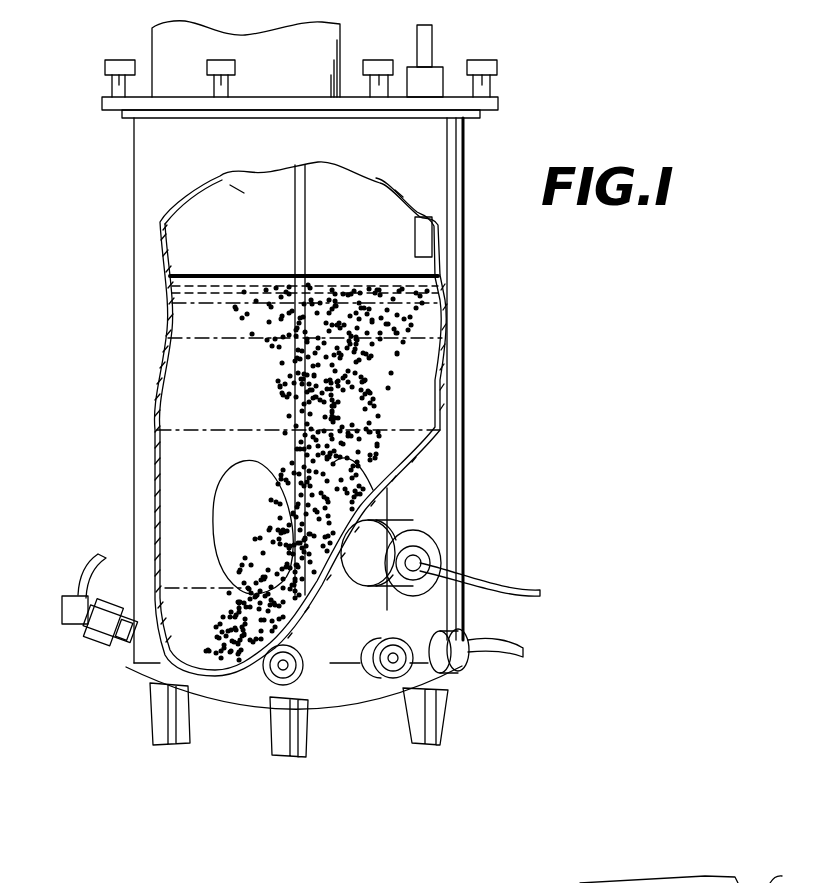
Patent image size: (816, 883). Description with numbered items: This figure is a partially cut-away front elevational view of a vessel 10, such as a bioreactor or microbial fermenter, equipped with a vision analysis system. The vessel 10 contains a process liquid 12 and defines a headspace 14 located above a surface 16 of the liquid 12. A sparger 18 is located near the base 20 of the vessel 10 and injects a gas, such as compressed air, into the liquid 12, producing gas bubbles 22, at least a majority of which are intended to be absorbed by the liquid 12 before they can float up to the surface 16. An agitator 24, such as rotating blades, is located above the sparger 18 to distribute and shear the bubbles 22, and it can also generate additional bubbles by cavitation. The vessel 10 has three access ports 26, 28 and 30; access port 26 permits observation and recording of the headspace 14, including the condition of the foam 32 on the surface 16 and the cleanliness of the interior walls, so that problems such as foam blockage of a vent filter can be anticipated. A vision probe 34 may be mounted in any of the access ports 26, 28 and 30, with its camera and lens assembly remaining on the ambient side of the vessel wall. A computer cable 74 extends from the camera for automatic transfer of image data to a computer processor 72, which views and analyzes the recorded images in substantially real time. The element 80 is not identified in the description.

The vessel 10 is at (450, 376).
The process liquid 12 is at (190, 402).
The headspace 14 is at (205, 190).
The surface of the liquid 16 is at (160, 265).
The sparger 18 is at (170, 668).
The base 20 is at (220, 700).
The gas bubbles 22 is at (455, 432).
The agitator 24 is at (220, 508).
The access port 26 is at (432, 77).
The access port 28 is at (420, 535).
The access port 30 is at (486, 652).
The foam 32 is at (430, 269).
The vision probe 34 is at (432, 551).
The computer cable 74 is at (536, 590).
The tray 80 is at (643, 880).
The computer processor 72 is at (793, 870).